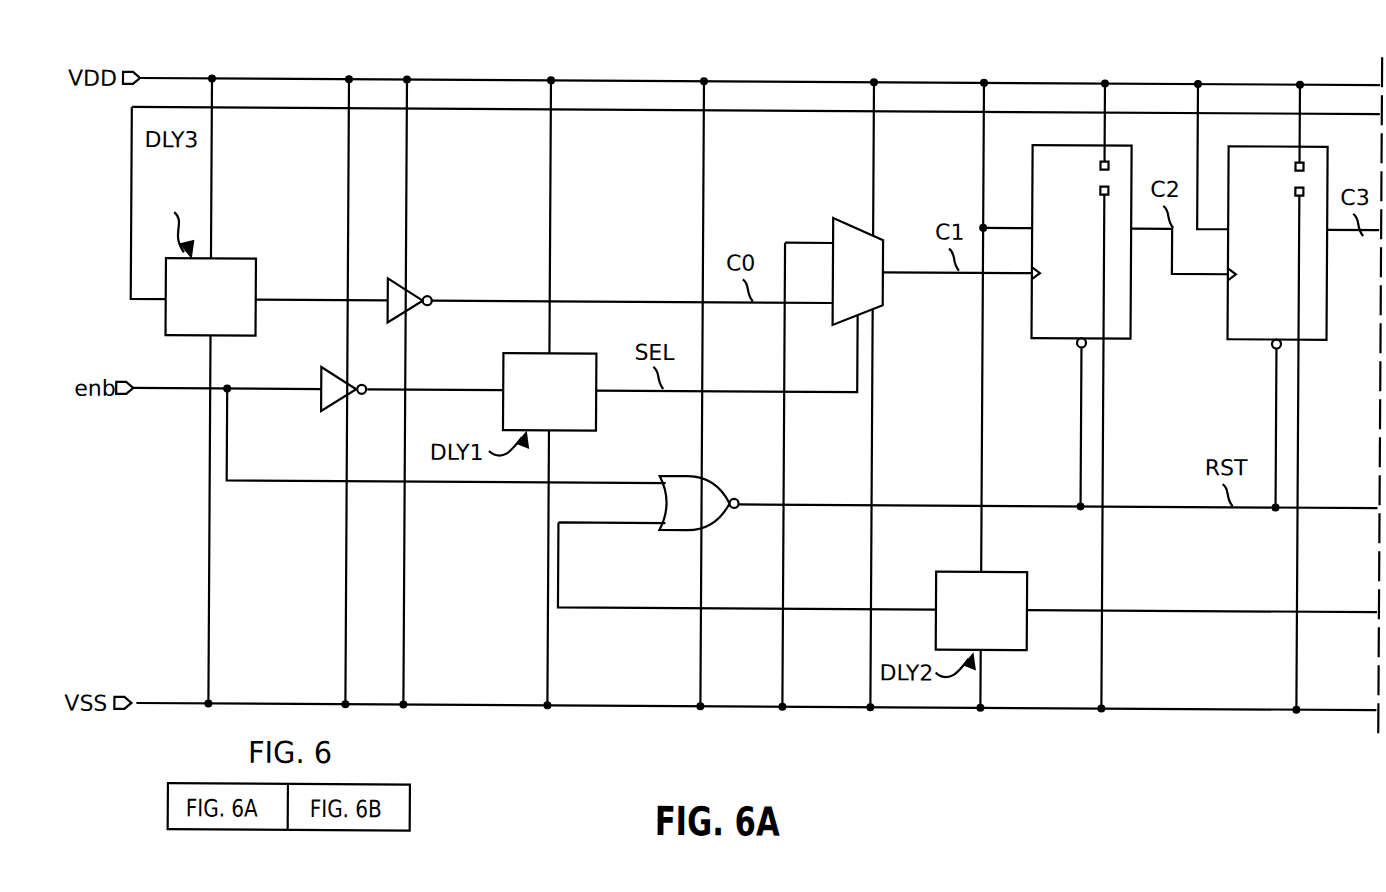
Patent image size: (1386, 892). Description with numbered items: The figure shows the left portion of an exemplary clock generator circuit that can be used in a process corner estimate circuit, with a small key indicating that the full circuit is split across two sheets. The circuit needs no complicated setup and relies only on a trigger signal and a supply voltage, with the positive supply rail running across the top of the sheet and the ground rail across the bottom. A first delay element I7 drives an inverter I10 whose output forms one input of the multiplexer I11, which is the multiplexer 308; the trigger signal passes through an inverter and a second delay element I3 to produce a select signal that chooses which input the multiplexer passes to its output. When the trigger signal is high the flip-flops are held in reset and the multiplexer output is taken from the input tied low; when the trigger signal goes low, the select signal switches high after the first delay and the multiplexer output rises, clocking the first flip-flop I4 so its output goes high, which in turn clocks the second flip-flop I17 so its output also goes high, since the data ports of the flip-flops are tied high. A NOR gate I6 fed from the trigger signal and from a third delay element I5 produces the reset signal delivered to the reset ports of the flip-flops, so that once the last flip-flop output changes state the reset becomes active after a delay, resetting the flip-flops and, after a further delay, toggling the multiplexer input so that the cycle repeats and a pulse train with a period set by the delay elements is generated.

The multiplexer 308 is at (885, 292).
The delay element DLY3 I7 is at (215, 282).
The inverter I10 is at (421, 285).
The delay element DLY1 I3 is at (550, 374).
The multiplexer I11 is at (878, 258).
The NOR gate I6 is at (707, 489).
The delay element DLY2 I5 is at (976, 594).
The flip-flop I4 is at (1099, 234).
The flip-flop I17 is at (1301, 236).